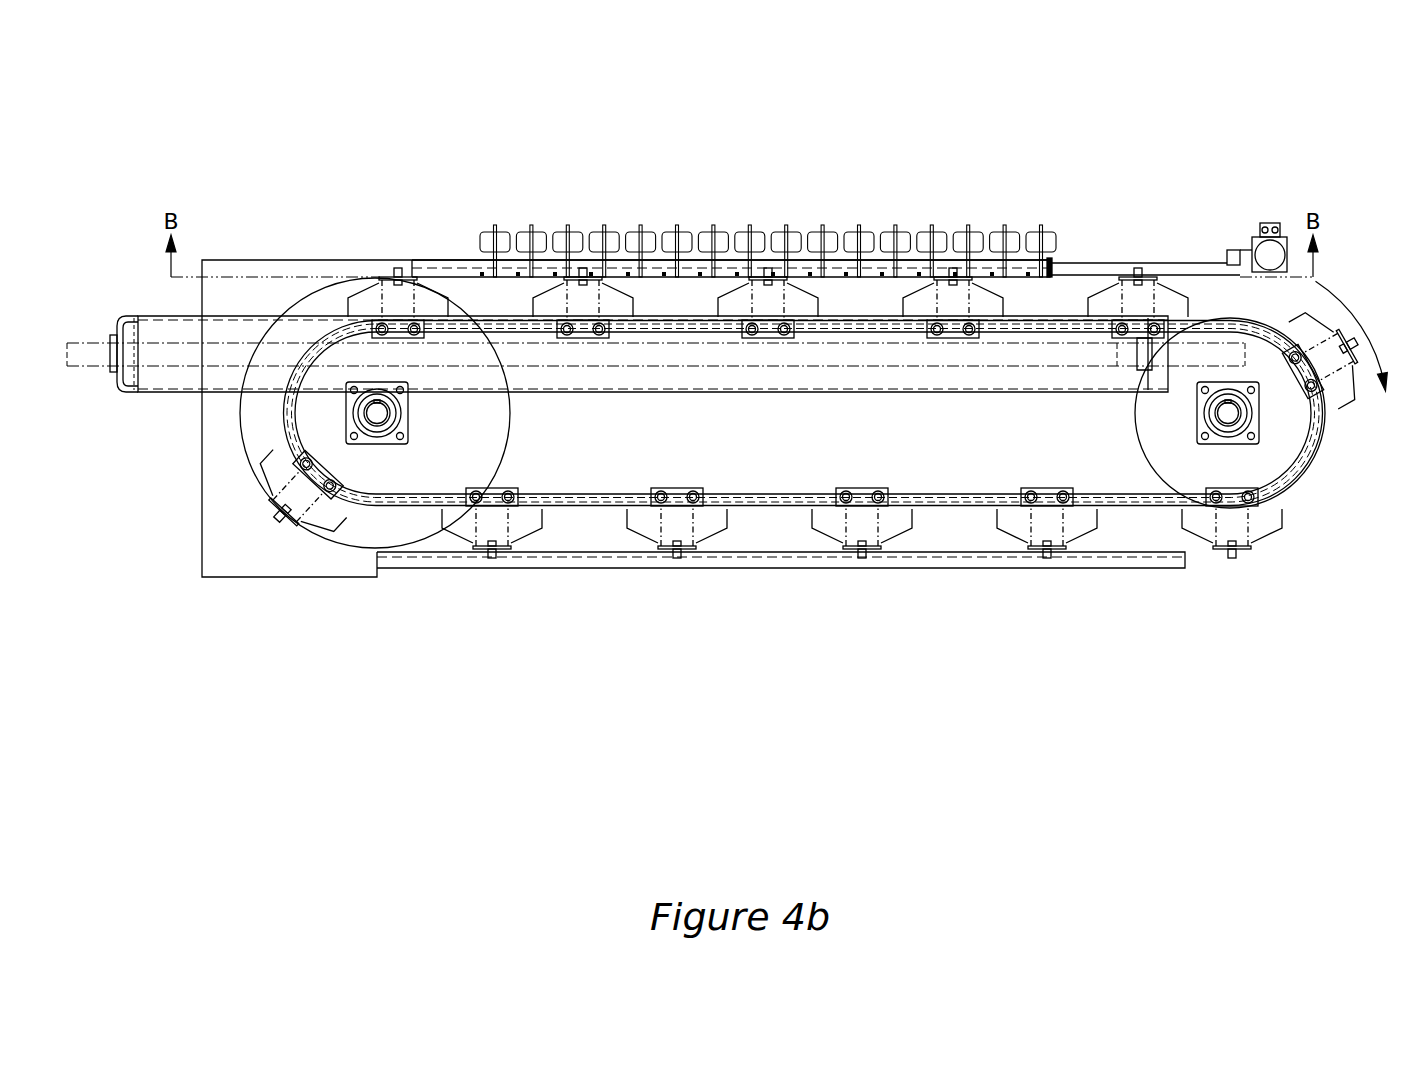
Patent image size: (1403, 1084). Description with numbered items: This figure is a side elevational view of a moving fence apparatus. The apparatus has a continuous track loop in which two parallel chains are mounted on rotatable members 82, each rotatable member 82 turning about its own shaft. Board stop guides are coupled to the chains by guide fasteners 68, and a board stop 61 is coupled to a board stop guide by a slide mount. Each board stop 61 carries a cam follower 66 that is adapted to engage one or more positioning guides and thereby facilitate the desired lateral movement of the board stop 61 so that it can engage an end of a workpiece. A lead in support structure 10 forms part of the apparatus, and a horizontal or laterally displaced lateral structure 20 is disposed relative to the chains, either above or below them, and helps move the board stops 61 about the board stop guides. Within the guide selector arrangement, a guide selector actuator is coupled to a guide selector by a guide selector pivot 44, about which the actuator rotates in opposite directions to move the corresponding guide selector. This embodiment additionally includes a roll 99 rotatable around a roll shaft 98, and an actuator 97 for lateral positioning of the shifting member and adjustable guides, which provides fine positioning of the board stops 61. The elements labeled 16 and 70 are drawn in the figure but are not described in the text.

The lead in support structure 10 is at (300, 560).
The carrier block 16 is at (487, 240).
The lateral structure 20 is at (623, 258).
The guide selector pivot 44 is at (531, 230).
The board stop 61 is at (982, 303).
The cam follower 66 is at (398, 268).
The guide fastener 68 is at (945, 332).
The lower support plate 70 is at (600, 563).
The rotatable member 82 is at (382, 477).
The actuator 97 is at (1270, 255).
The roll shaft 98 is at (85, 350).
The roll 99 is at (185, 377).